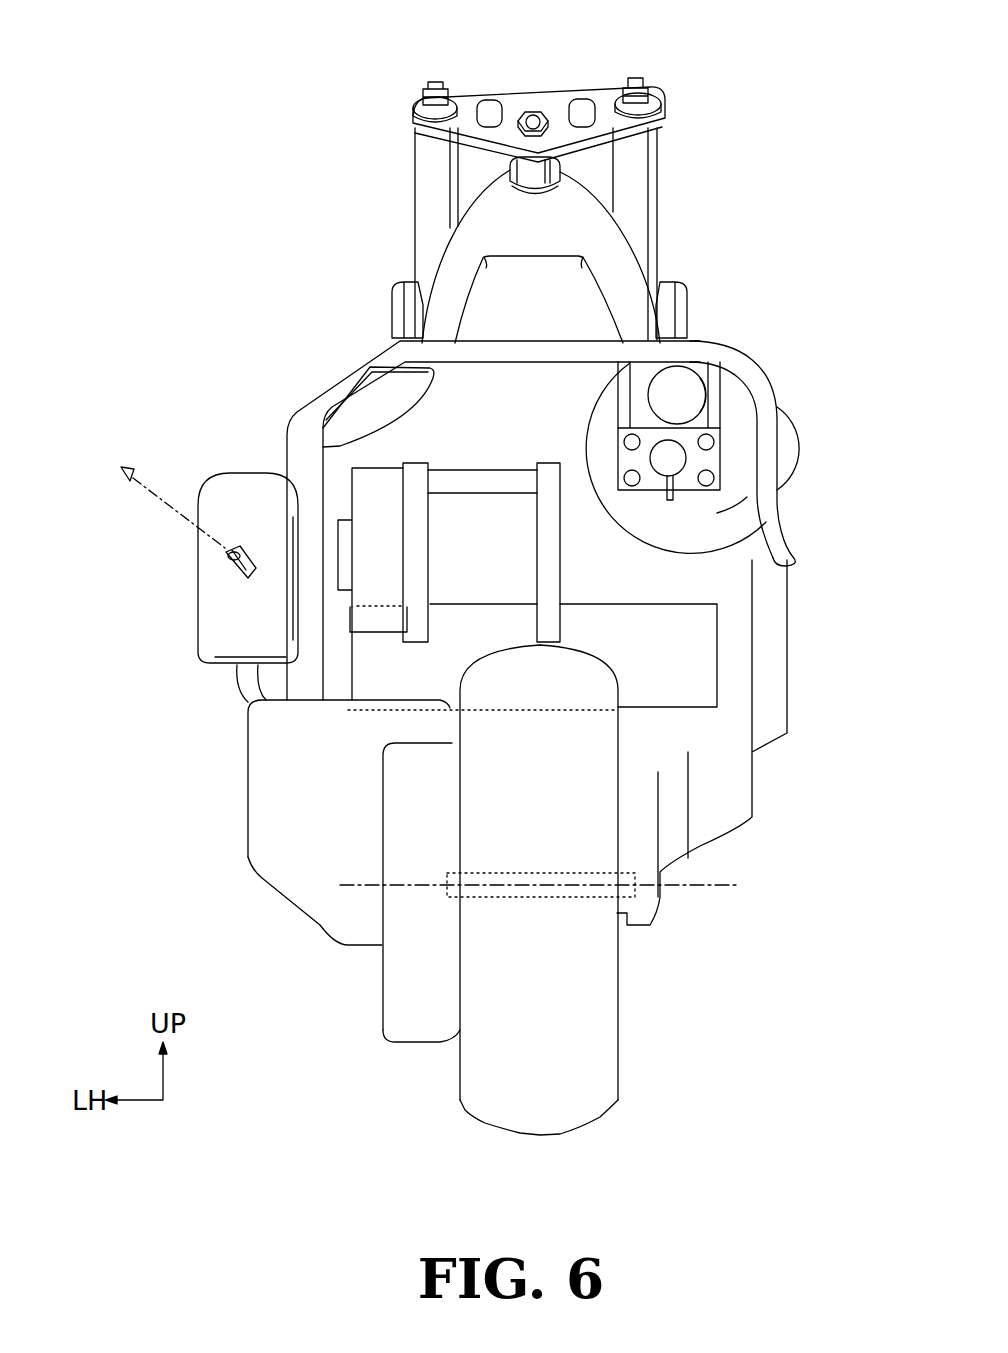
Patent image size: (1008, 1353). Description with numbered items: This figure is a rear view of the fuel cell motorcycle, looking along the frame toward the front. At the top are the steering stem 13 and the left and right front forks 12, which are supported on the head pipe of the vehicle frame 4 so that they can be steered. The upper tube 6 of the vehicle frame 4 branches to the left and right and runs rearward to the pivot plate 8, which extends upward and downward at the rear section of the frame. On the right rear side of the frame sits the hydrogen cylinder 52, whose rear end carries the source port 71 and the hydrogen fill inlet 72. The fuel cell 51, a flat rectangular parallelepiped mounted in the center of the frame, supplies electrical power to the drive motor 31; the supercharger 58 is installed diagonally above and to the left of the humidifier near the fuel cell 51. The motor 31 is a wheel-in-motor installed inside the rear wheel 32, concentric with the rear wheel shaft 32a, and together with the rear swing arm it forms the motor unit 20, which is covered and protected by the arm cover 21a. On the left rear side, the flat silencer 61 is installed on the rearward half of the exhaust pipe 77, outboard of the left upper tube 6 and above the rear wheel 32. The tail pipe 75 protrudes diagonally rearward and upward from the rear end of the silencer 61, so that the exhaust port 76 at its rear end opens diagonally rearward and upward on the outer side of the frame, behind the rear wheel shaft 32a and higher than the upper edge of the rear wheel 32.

The steering stem 13 is at (523, 95).
The front forks 12 is at (423, 187).
The vehicle frame 4 is at (626, 243).
The upper tube 6 is at (447, 273).
The hydrogen cylinder 52 is at (787, 390).
The pivot plate 8 is at (285, 453).
The supercharger 58 is at (465, 465).
The source port 71 is at (657, 396).
The hydrogen fill inlet 72 is at (662, 458).
The silencer 61 is at (213, 490).
The exhaust port 76 is at (222, 560).
The tail pipe 75 is at (240, 577).
The fuel cell 51 is at (590, 604).
The exhaust pipe 77 is at (233, 687).
The motor unit 20 is at (233, 817).
The arm cover 21a is at (300, 890).
The motor 31 is at (412, 993).
The rear wheel shaft 32a is at (541, 898).
The rear wheel 32 is at (610, 1048).